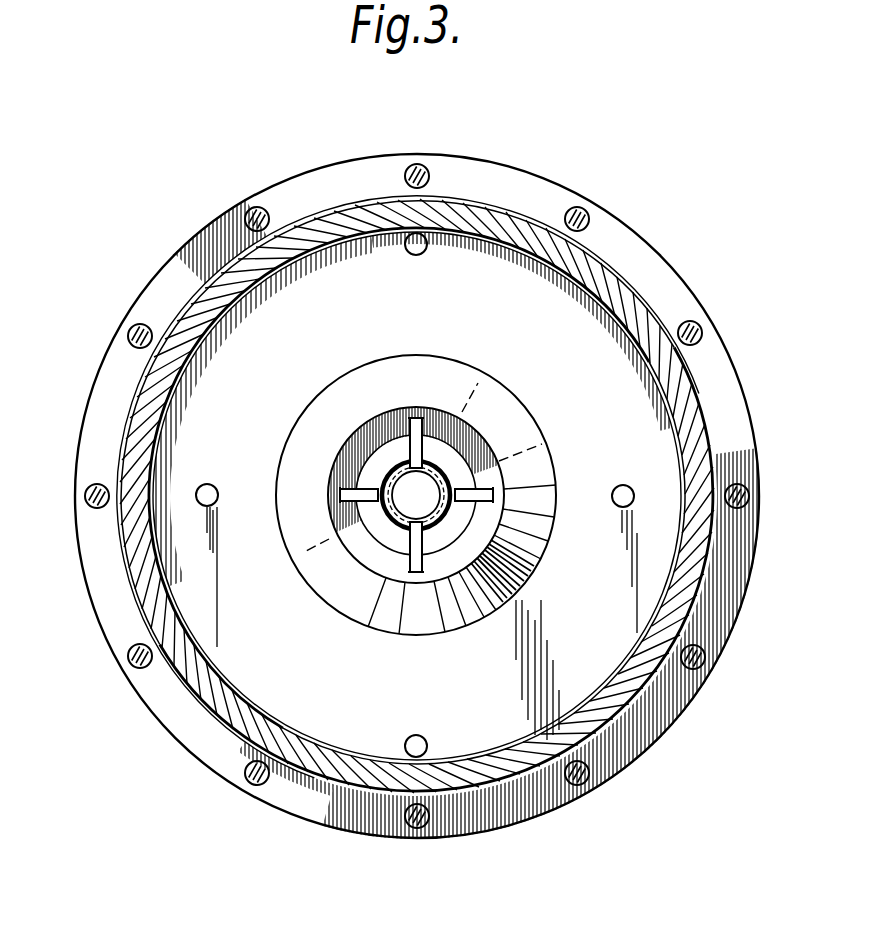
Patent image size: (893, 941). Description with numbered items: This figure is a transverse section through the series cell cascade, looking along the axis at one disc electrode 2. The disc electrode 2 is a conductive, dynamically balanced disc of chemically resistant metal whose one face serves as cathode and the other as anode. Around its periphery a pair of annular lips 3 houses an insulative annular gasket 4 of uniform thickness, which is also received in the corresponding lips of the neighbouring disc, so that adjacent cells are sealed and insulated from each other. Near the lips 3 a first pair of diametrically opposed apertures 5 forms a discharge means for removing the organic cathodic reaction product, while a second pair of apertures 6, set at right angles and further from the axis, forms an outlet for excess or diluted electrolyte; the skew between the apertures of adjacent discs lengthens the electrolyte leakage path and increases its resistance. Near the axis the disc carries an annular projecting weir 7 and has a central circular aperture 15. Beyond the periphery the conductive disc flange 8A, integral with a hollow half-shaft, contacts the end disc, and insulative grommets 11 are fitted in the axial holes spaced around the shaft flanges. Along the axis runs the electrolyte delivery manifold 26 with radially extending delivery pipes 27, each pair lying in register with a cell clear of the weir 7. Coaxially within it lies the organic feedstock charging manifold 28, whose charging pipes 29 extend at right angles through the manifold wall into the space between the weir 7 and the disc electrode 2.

The disc electrode 2 is at (340, 438).
The peripheral annular lips 3 is at (207, 320).
The insulative annular gasket 4 is at (382, 213).
The first pair of apertures 5 is at (624, 485).
The second pair of apertures 6 is at (433, 230).
The annular projecting weir 7 is at (538, 511).
The conductive disc flange 8A is at (727, 553).
The insulative grommet 11 is at (702, 655).
The central circular aperture 15 is at (447, 537).
The electrolyte delivery manifold 26 is at (413, 418).
The delivery pipe 27 is at (348, 497).
The organic feedstock charging manifold 28 is at (407, 520).
The charging pipe 29 is at (422, 575).